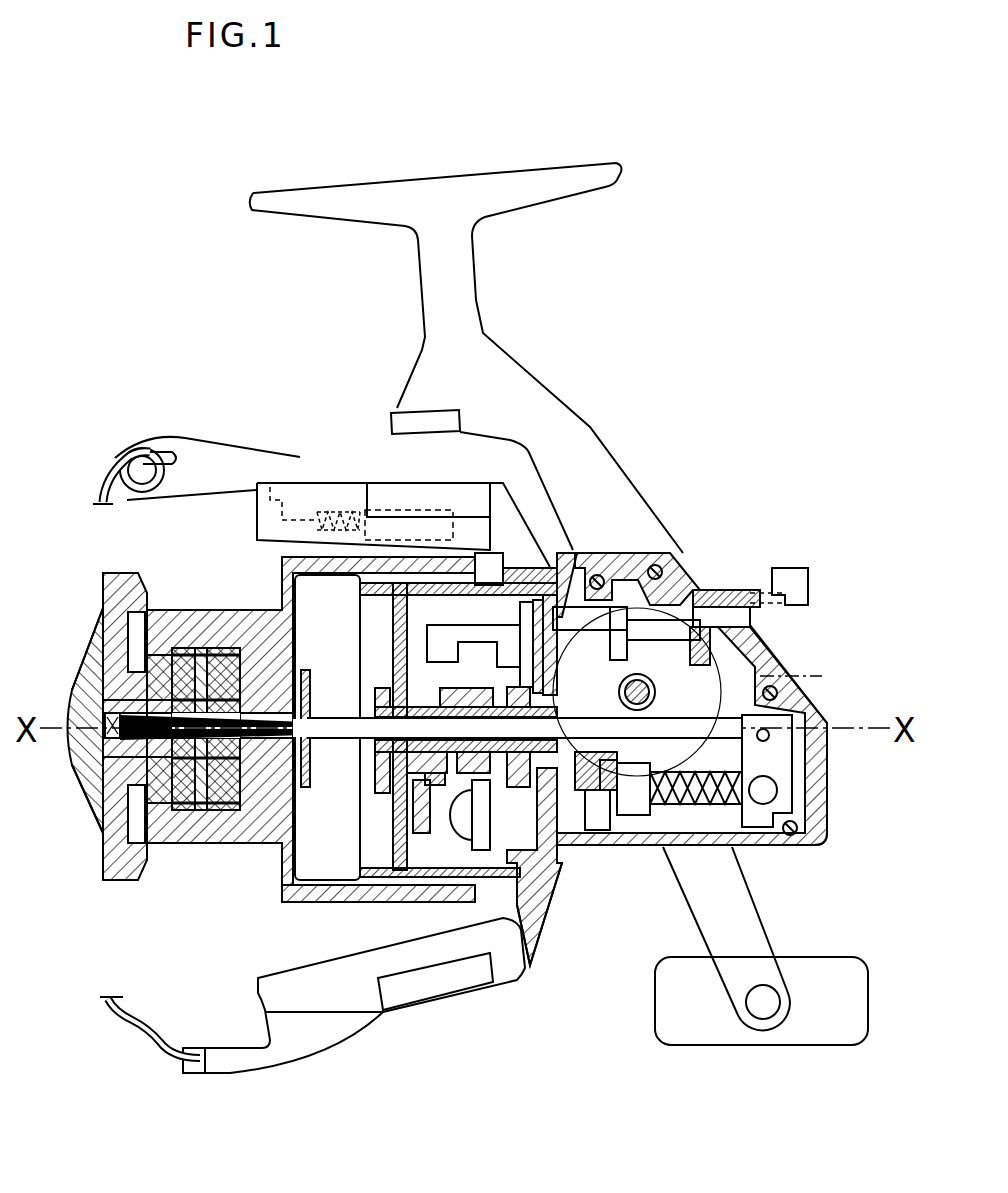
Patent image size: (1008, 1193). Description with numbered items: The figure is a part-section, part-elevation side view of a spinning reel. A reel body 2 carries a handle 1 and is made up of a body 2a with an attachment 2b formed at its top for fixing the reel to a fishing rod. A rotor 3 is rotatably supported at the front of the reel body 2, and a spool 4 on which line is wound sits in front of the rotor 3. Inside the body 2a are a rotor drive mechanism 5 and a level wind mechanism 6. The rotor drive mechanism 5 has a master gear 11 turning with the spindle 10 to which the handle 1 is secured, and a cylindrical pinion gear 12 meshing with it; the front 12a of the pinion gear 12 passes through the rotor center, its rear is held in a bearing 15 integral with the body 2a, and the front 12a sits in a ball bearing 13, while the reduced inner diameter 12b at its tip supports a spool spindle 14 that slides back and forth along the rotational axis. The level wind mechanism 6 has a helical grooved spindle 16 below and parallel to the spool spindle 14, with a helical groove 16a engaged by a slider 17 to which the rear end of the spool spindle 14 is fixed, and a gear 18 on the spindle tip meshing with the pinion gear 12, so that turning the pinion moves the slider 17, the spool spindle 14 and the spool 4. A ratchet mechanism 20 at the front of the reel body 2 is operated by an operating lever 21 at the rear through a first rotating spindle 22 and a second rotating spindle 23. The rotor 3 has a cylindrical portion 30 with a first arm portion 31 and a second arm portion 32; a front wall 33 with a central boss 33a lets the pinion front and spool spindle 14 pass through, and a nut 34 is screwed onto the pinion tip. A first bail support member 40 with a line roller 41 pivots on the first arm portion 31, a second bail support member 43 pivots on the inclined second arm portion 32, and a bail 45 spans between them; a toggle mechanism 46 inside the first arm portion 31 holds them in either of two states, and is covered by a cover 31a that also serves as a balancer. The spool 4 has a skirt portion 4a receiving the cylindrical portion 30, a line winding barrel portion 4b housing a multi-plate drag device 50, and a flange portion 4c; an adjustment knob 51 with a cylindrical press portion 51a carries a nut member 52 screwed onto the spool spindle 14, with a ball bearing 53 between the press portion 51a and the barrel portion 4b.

The handle 1 is at (775, 1046).
The reel body 2 is at (832, 853).
The body 2a is at (832, 850).
The attachment 2b is at (470, 295).
The rotor 3 is at (557, 910).
The spool 4 is at (278, 572).
The skirt portion 4a is at (290, 903).
The line winding barrel portion 4b is at (192, 610).
The flange portion 4c is at (120, 577).
The rotor drive mechanism 5 is at (738, 666).
The level wind mechanism 6 is at (665, 853).
The spindle 10 is at (655, 692).
The master gear 11 is at (814, 672).
The pinion gear 12 is at (593, 642).
The front 12a is at (390, 817).
The inner diameter 12b is at (373, 747).
The ball bearing 13 is at (532, 945).
The spool spindle 14 is at (330, 724).
The bearing 15 is at (686, 808).
The helical grooved spindle 16 is at (628, 835).
The helical groove 16a is at (750, 847).
The slider 17 is at (785, 755).
The gear 18 is at (585, 835).
The ratchet mechanism 20 is at (475, 618).
The operating lever 21 is at (790, 575).
The first rotating spindle 22 is at (560, 635).
The second rotating spindle 23 is at (700, 605).
The cylindrical portion 30 is at (340, 900).
The first arm portion 31 is at (298, 492).
The cover 31a is at (382, 480).
The second arm portion 32 is at (444, 990).
The front wall 33 is at (390, 604).
The boss 33a is at (418, 862).
The nut 34 is at (377, 705).
The first bail support member 40 is at (197, 440).
The line roller 41 is at (133, 458).
The second bail support member 43 is at (228, 1075).
The bail 45 is at (127, 1032).
The toggle mechanism 46 is at (430, 510).
The drag device 50 is at (213, 812).
The adjustment knob 51 is at (82, 690).
The cylindrical press portion 51a is at (117, 770).
The nut member 52 is at (152, 760).
The ball bearing 53 is at (146, 832).